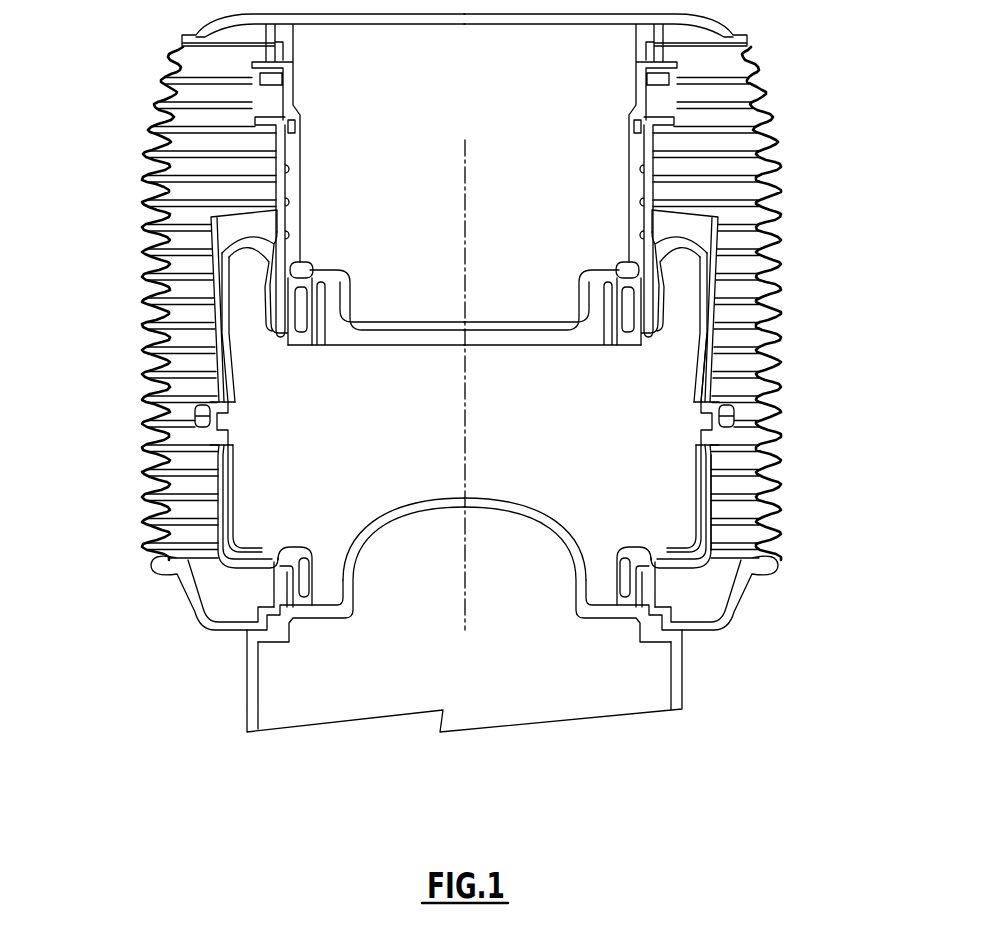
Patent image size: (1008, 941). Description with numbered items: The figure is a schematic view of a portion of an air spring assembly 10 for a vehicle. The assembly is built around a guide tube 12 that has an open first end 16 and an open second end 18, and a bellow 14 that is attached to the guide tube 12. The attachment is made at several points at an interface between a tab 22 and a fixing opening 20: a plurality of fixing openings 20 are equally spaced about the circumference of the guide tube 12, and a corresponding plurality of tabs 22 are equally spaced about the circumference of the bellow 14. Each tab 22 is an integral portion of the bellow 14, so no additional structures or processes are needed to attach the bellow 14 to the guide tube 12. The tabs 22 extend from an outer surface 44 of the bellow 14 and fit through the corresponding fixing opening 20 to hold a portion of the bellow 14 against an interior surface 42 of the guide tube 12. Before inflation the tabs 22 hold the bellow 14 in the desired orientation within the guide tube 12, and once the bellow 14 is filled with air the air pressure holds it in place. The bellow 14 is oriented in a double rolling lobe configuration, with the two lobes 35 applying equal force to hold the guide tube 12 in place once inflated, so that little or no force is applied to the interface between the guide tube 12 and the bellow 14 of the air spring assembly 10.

The air spring assembly 10 is at (116, 44).
The guide tube 12 is at (720, 231).
The bellow 14 is at (714, 302).
The first end 16 is at (708, 208).
The second end 18 is at (710, 560).
The fixing opening 20 is at (221, 440).
The tab 22 is at (203, 424).
The lobe 35 is at (243, 240).
The interior surface 42 is at (700, 342).
The outer surface 44 is at (708, 487).